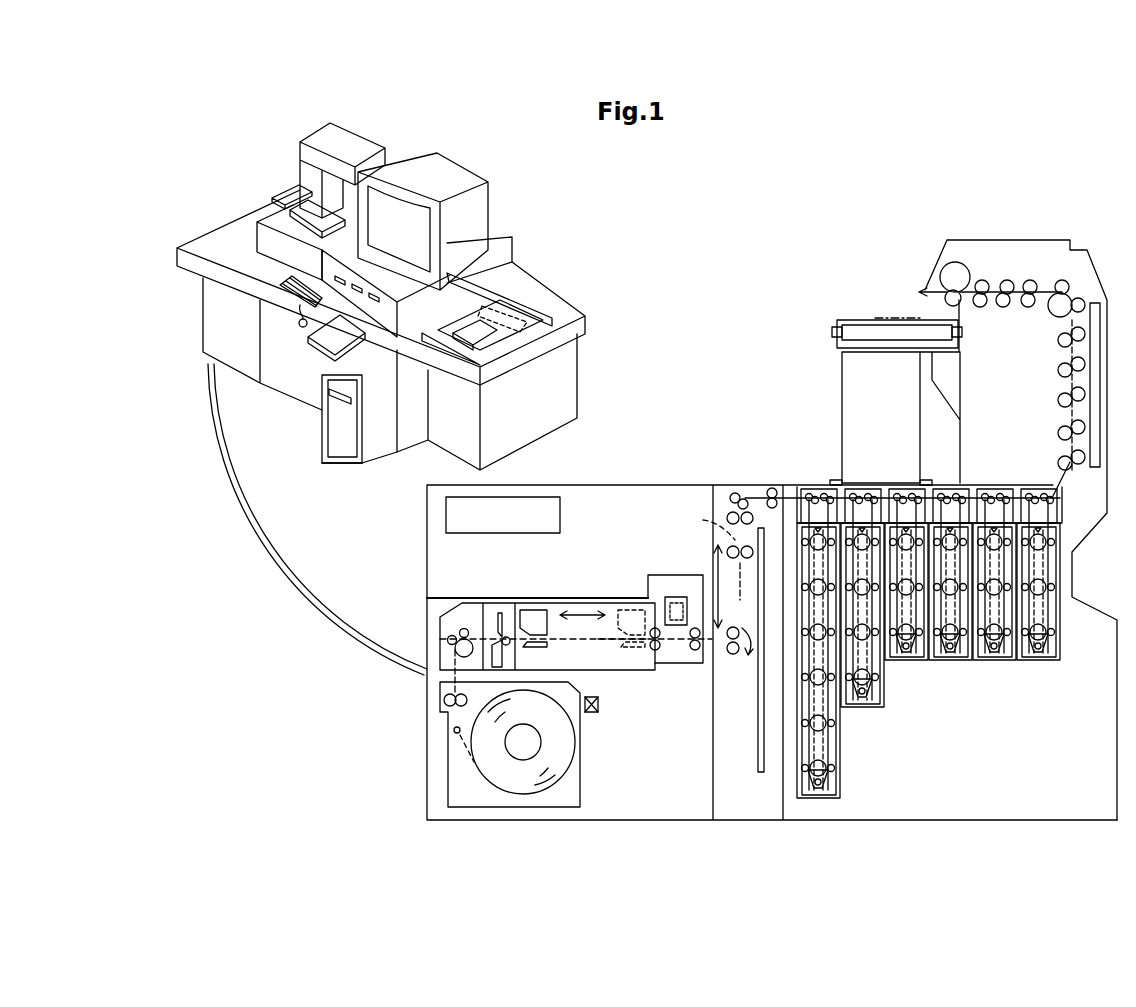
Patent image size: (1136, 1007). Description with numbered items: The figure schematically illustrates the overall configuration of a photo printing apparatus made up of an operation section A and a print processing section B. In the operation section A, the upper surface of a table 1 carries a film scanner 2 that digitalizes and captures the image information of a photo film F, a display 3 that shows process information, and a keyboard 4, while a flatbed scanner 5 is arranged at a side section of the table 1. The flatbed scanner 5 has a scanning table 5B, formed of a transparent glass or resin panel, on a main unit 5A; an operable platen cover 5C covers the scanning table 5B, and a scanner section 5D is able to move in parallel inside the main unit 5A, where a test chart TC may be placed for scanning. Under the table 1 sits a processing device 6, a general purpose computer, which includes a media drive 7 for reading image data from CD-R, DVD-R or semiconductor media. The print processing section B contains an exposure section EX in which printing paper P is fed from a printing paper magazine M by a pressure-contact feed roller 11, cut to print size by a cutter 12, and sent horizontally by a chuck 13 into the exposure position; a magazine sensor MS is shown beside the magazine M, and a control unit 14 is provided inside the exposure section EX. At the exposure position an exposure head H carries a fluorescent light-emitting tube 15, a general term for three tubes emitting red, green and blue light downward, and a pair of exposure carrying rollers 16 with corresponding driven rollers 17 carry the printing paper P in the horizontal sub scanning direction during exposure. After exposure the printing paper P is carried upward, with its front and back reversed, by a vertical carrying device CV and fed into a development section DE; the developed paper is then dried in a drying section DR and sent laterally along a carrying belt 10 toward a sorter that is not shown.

The operation section A is at (364, 387).
The table 1 is at (185, 247).
The film scanner 2 is at (300, 153).
The display 3 is at (413, 157).
The keyboard 4 is at (290, 290).
The flatbed scanner 5 is at (534, 303).
The main unit 5A is at (513, 347).
The scanning table 5B is at (492, 347).
The platen cover 5C is at (503, 303).
The scanner section 5D is at (560, 343).
The processing device 6 is at (358, 465).
The media drive 7 is at (337, 392).
The photo film F is at (290, 196).
The test chart TC is at (458, 322).
The exposure section EX is at (729, 599).
The carrying belt 10 is at (863, 320).
The pressure-contact feed roller 11 is at (455, 645).
The cutter 12 is at (498, 617).
The chuck 13 is at (537, 612).
The control unit 14 is at (446, 520).
The fluorescent light-emitting tube 15 is at (677, 597).
The exposure carrying rollers 16 is at (655, 627).
The driven rollers 17 is at (693, 652).
The exposure head H is at (668, 598).
The printing paper P is at (712, 515).
The print processing section B is at (506, 728).
The printing paper magazine M is at (577, 772).
The magazine sensor MS is at (598, 705).
The vertical carrying device CV is at (770, 484).
The drying section DR is at (1048, 392).
The development section DE is at (987, 666).